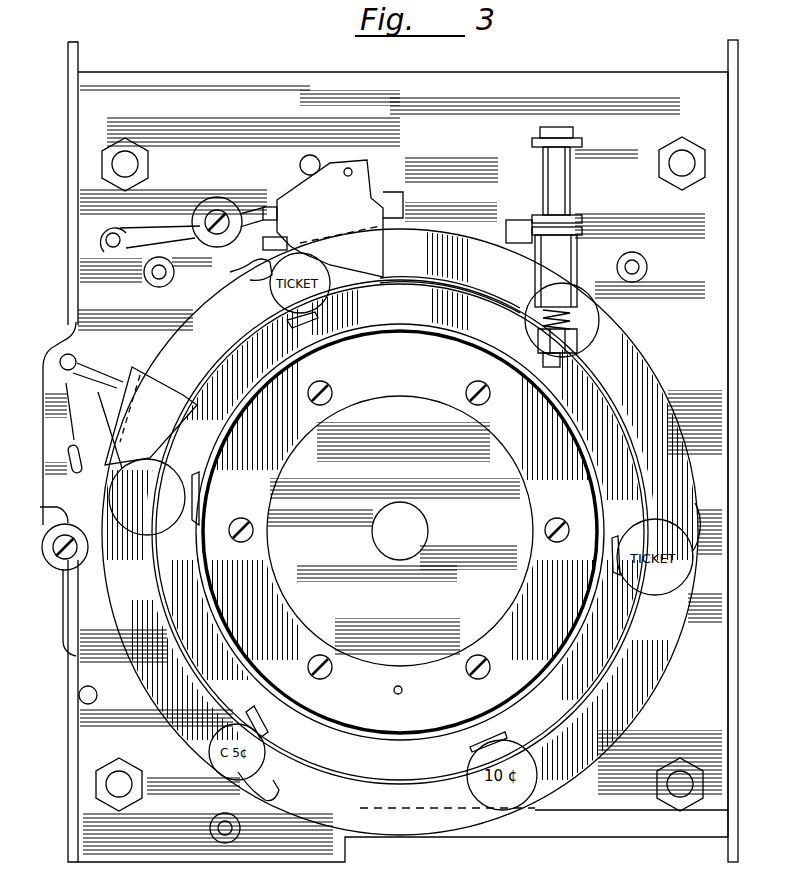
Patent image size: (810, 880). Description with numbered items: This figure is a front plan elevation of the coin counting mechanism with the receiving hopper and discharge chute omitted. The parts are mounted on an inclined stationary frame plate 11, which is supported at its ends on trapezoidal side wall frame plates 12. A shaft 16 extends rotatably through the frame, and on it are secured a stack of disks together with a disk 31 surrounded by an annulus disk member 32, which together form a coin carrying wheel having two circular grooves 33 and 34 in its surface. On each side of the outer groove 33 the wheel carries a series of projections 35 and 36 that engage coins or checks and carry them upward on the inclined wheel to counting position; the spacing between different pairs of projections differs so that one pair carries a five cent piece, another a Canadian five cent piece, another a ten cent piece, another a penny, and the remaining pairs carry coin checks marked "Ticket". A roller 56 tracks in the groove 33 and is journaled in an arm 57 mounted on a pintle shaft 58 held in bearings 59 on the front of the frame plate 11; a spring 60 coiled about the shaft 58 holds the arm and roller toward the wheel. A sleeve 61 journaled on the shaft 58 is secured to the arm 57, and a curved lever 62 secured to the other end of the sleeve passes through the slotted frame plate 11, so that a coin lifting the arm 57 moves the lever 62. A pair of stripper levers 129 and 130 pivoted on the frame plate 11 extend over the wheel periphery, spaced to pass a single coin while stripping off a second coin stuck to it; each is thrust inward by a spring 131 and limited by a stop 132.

The inclined stationary frame plate 11 is at (386, 467).
The trapezoidal side wall frame plates 12 is at (70, 677).
The shaft 16 is at (387, 543).
The disk 31 is at (399, 530).
The annulus disk member 32 is at (400, 532).
The outer circular groove 33 is at (397, 780).
The circular groove 34 is at (399, 695).
The projections 35 is at (232, 276).
The projections 36 is at (300, 324).
The roller 56 is at (482, 290).
The arm 57 is at (536, 340).
The pintle shaft 58 is at (570, 193).
The bearings 59 is at (580, 142).
The spring 60 is at (600, 323).
The sleeve 61 is at (596, 300).
The curved lever 62 is at (582, 236).
The stripper lever 129 is at (151, 416).
The stripper lever 130 is at (340, 218).
The spring 131 is at (170, 230).
The stop 132 is at (283, 240).